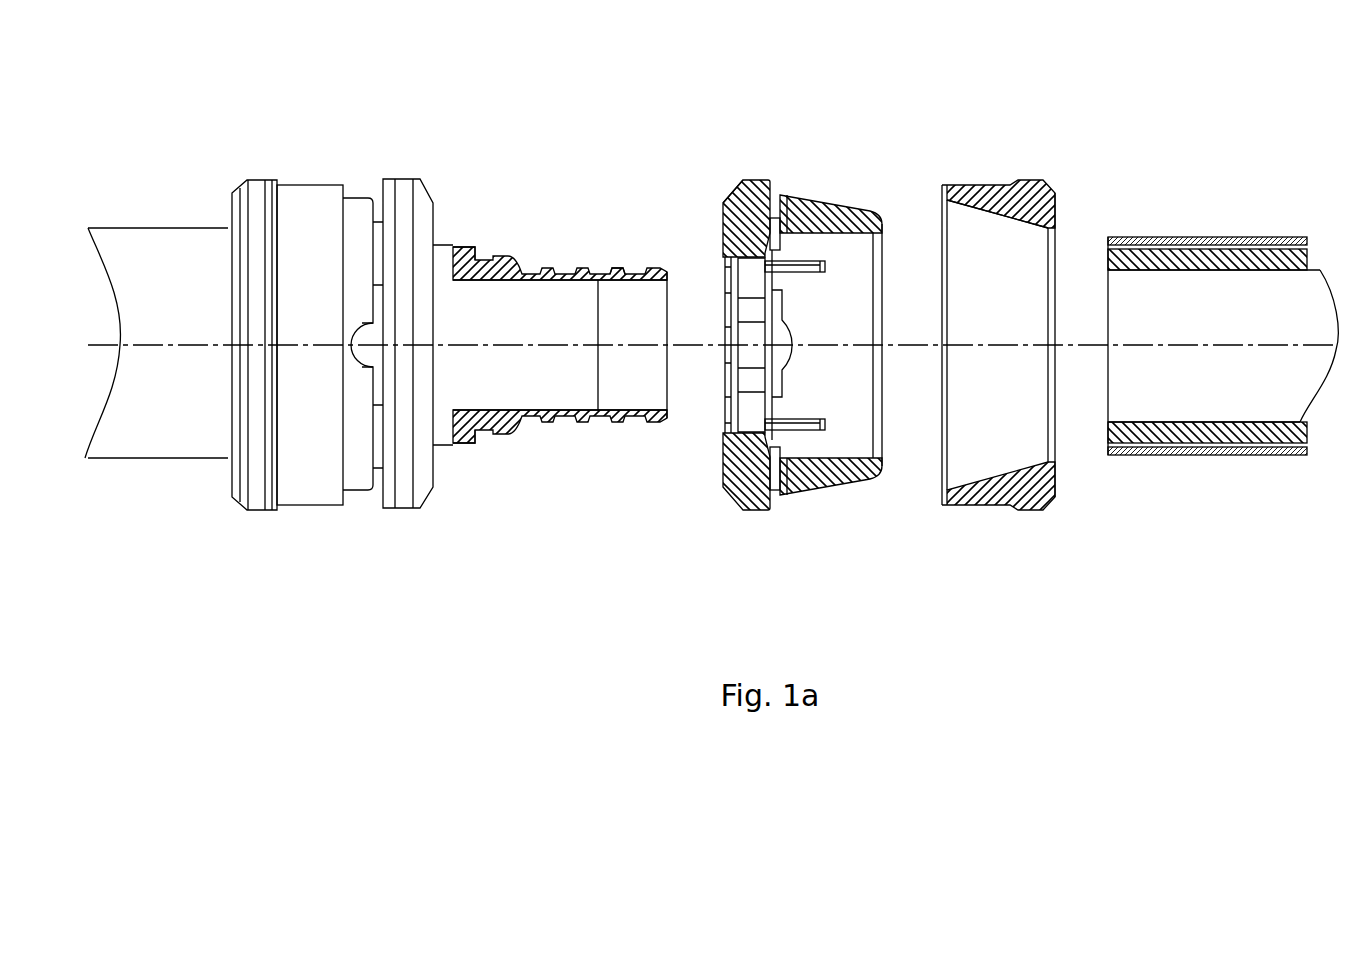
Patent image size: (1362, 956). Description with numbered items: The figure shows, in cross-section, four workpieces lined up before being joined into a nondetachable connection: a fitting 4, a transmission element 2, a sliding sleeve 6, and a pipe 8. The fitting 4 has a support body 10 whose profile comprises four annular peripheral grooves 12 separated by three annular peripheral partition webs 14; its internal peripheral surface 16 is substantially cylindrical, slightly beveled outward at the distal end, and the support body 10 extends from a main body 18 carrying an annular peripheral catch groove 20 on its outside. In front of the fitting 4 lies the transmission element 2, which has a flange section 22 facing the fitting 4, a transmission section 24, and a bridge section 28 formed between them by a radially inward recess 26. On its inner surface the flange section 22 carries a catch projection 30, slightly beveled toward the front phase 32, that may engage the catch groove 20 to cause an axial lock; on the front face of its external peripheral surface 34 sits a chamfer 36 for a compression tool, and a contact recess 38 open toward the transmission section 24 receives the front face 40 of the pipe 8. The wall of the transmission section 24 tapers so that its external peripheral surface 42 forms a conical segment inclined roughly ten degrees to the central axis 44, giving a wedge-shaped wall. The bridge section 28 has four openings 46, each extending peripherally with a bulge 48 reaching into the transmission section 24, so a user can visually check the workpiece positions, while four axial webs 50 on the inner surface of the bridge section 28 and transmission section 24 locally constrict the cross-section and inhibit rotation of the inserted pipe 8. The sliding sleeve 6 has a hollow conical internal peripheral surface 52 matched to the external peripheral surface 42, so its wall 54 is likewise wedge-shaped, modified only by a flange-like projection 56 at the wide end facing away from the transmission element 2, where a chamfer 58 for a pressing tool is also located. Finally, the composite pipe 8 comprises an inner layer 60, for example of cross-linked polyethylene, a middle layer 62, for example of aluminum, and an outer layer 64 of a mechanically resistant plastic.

The transmission element 2 is at (773, 318).
The fitting 4 is at (487, 574).
The sliding sleeve 6 is at (1017, 389).
The pipe 8 is at (1207, 274).
The support body 10 is at (560, 329).
The annular peripheral grooves 12 is at (524, 268).
The annular peripheral partition webs 14 is at (616, 268).
The internal peripheral surface 16 is at (532, 288).
The main body 18 is at (471, 240).
The catch groove 20 is at (482, 436).
The flange section 22 is at (760, 346).
The transmission section 24 is at (838, 349).
The recess 26 is at (784, 195).
The bridge section 28 is at (779, 499).
The catch projection 30 is at (732, 443).
The front phase 32 is at (700, 226).
The external peripheral surface 34 is at (759, 176).
The chamfer 36 is at (730, 190).
The contact recess 38 is at (771, 257).
The front face 40 is at (1077, 240).
The external peripheral surface 42 is at (859, 492).
The central axis 44 is at (1195, 345).
The openings 46 is at (774, 318).
The bulge 48 is at (789, 357).
The webs 50 is at (827, 425).
The internal peripheral surface 52 is at (991, 220).
The wall 54 is at (970, 500).
The flange-like projection 56 is at (1031, 183).
The chamfer 58 is at (1053, 509).
The inner layer 60 is at (1160, 262).
The middle layer 62 is at (1190, 450).
The outer layer 64 is at (1250, 240).